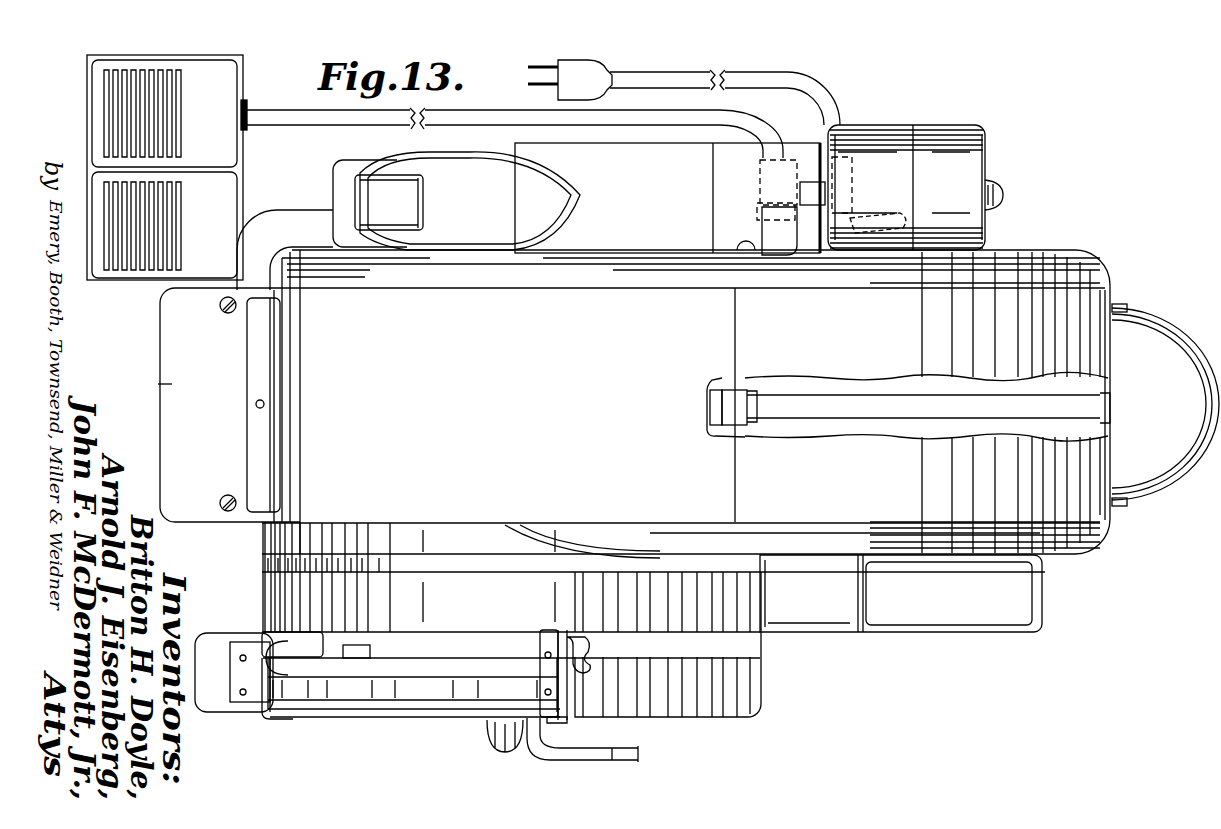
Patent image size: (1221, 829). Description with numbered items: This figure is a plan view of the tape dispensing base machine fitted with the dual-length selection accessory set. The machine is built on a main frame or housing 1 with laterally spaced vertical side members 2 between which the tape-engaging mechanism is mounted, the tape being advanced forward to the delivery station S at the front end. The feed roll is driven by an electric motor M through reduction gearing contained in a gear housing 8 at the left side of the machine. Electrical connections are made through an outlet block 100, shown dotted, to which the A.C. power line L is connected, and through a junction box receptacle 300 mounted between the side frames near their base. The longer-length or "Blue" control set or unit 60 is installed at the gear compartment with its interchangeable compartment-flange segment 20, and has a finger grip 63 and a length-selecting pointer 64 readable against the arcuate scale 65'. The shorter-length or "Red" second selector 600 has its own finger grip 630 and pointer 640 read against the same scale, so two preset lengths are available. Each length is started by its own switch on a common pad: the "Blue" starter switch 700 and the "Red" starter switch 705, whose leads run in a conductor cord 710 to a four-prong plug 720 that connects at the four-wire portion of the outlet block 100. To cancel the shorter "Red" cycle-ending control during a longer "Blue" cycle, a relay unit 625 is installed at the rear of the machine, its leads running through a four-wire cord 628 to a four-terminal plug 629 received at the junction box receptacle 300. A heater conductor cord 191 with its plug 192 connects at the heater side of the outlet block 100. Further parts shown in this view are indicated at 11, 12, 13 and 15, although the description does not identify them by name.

The main frame or housing 1 is at (1067, 250).
The vertical side members 2 is at (1006, 270).
The gear housing 8 is at (674, 158).
The panel plate 11 is at (154, 384).
The slide bar 12 is at (248, 434).
The knob 13 is at (256, 402).
The base box 15 is at (942, 602).
The compartment-flange segment 20 is at (490, 582).
The control set or unit 60 is at (573, 632).
The finger grip 63 is at (596, 656).
The length-selecting pointer 64 is at (562, 722).
The arcuate scale 65' is at (511, 704).
The outlet block 100 is at (762, 222).
The heater conductor cord 191 is at (652, 80).
The heater plug 192 is at (852, 160).
The junction box receptacle 300 is at (708, 416).
The second selector 600 is at (251, 642).
The relay unit 625 is at (1158, 322).
The four-wire cord 628 is at (870, 392).
The four-terminal plug 629 is at (740, 402).
The finger grip 630 is at (278, 654).
The pointer 640 is at (272, 720).
The 'Blue' starter switch 700 is at (228, 260).
The 'Red' starter switch 705 is at (228, 148).
The conductor cord 710 is at (375, 115).
The four-prong plug 720 is at (770, 177).
The A.C. power line L is at (887, 210).
The electric motor M is at (876, 136).
The delivery station S is at (154, 333).